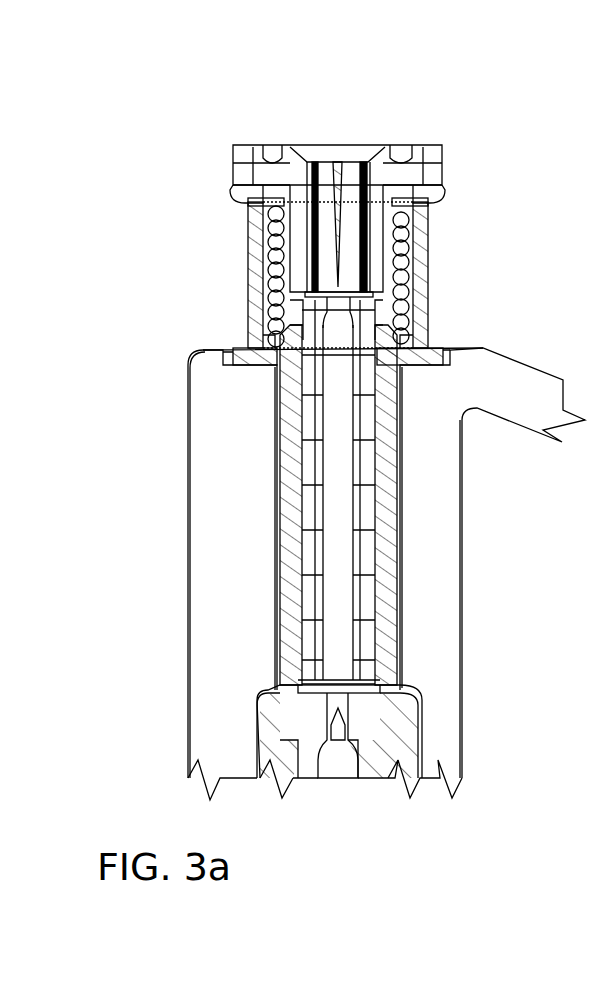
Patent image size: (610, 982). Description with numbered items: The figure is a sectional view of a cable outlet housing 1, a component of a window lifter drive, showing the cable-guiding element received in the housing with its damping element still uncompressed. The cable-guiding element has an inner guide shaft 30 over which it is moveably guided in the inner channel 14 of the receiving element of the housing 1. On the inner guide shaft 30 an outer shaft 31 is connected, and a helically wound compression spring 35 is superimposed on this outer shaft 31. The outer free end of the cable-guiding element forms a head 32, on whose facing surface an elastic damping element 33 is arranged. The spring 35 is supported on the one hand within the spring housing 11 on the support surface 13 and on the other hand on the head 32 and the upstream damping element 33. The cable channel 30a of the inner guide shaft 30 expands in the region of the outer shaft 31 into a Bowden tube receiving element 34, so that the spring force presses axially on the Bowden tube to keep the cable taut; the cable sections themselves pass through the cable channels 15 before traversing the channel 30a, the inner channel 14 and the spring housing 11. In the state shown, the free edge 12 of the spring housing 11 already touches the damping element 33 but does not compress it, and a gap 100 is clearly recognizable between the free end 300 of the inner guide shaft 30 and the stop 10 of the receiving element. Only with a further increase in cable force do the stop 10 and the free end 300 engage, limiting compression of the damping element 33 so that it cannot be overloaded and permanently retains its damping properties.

The cable outlet housing 1 is at (187, 572).
The stop 10 is at (370, 695).
The gap 100 is at (340, 687).
The spring housing 11 is at (427, 258).
The free edge 12 is at (427, 207).
The support surface 13 is at (395, 353).
The inner channel 14 is at (393, 563).
The cable channel 15 is at (340, 765).
The inner guide shaft 30 is at (370, 552).
The channel 30a is at (338, 520).
The free end 300 is at (363, 680).
The outer shaft 31 is at (302, 278).
The head 32 is at (433, 170).
The damping element 33 is at (432, 193).
The Bowden tube receiving element 34 is at (327, 177).
The compression spring 35 is at (277, 250).